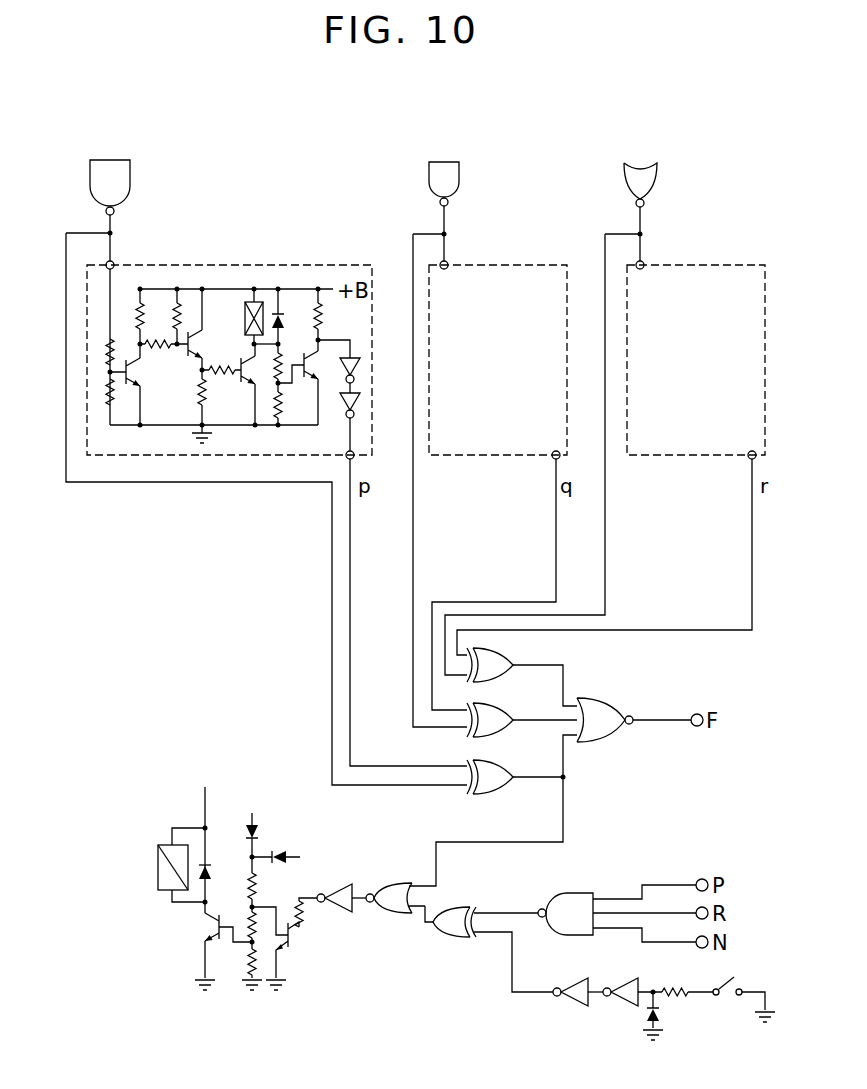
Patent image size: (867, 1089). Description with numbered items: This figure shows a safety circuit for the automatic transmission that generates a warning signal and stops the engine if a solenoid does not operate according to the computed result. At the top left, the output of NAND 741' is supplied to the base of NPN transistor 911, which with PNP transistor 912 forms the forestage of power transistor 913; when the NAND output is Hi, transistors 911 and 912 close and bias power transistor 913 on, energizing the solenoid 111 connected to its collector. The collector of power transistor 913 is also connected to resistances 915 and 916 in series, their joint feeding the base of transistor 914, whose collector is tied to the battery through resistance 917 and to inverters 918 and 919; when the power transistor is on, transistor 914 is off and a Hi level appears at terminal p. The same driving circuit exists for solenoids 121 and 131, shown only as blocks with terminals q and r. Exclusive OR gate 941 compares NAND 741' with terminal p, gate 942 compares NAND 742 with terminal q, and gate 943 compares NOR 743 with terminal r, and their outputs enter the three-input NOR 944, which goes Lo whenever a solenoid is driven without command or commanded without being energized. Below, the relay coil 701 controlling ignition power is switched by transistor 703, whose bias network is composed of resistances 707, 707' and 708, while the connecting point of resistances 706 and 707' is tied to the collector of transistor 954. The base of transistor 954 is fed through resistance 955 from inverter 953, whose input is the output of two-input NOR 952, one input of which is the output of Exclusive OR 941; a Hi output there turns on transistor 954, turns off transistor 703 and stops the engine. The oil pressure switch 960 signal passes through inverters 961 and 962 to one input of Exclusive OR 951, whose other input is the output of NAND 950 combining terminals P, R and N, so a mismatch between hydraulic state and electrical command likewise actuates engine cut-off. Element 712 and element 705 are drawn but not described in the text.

The NAND 741' is at (111, 167).
The NAND 742 is at (444, 162).
The NOR 743 is at (640, 164).
The solenoid 111 is at (252, 302).
The solenoid 121 is at (497, 282).
The solenoid 131 is at (699, 282).
The NPN transistor 911 is at (130, 368).
The PNP transistor 912 is at (191, 345).
The power transistor 913 is at (240, 377).
The transistor 914 is at (320, 363).
The resistance 915 is at (284, 362).
The resistance 916 is at (282, 411).
The resistance 917 is at (320, 322).
The inverter 918 is at (360, 375).
The inverter 919 is at (360, 409).
The Exclusive OR gate 941 is at (501, 764).
The Exclusive OR gate 942 is at (501, 706).
The Exclusive OR gate 943 is at (500, 655).
The three-input NOR 944 is at (626, 688).
The relay coil 701 is at (158, 872).
The zener diode 712 is at (206, 870).
The transistor 703 is at (215, 925).
The diode 705 is at (288, 855).
The resistance 706 is at (255, 833).
The resistance 707 is at (280, 882).
The resistance 707' is at (205, 924).
The resistance 708 is at (248, 958).
The transistor 954 is at (292, 950).
The resistance 955 is at (306, 925).
The inverter 953 is at (335, 882).
The two-input NOR 952 is at (393, 914).
The Exclusive OR 951 is at (451, 940).
The NAND 950 is at (572, 885).
The oil pressure switch 960 is at (726, 996).
The inverter 961 is at (624, 1007).
The inverter 962 is at (567, 1002).